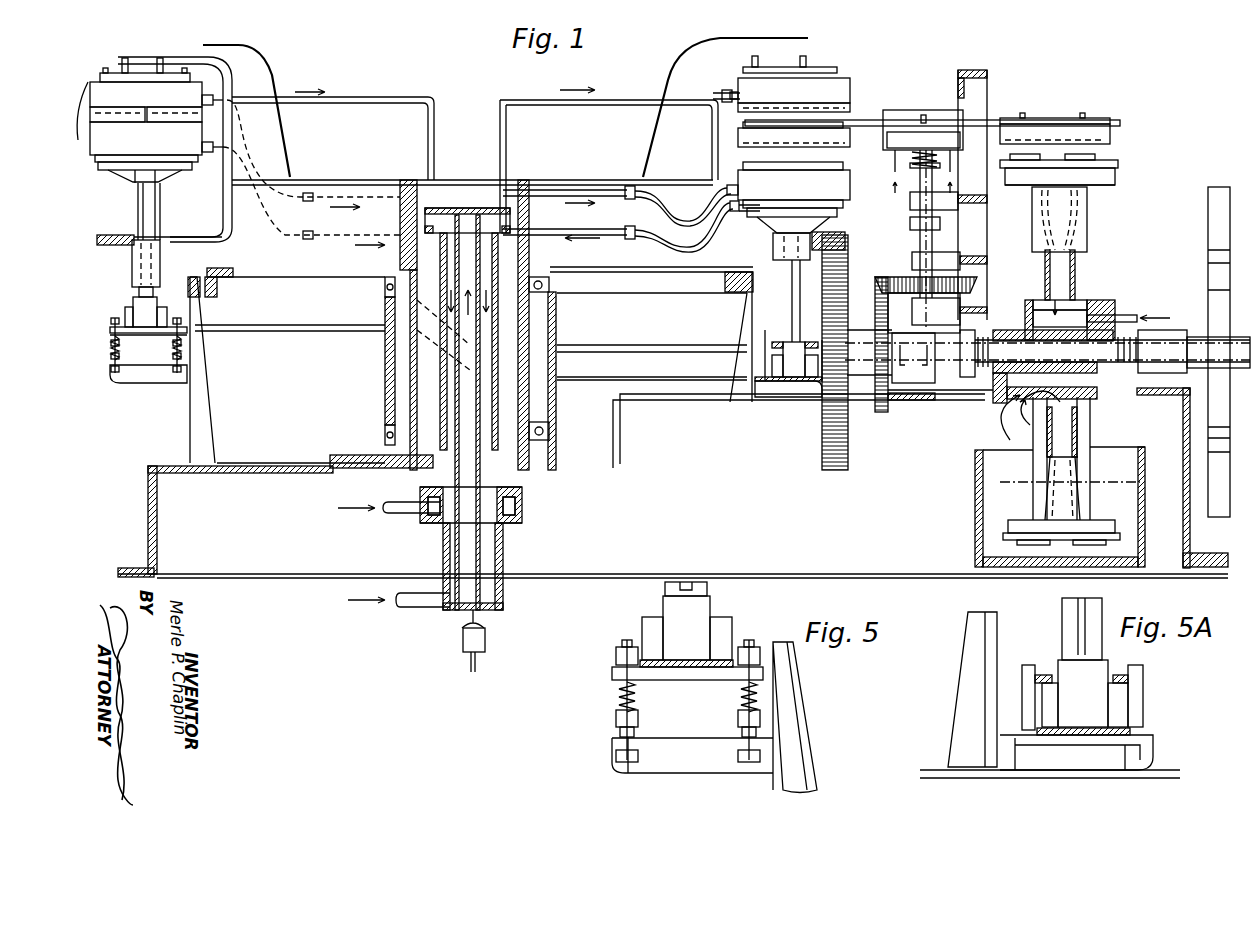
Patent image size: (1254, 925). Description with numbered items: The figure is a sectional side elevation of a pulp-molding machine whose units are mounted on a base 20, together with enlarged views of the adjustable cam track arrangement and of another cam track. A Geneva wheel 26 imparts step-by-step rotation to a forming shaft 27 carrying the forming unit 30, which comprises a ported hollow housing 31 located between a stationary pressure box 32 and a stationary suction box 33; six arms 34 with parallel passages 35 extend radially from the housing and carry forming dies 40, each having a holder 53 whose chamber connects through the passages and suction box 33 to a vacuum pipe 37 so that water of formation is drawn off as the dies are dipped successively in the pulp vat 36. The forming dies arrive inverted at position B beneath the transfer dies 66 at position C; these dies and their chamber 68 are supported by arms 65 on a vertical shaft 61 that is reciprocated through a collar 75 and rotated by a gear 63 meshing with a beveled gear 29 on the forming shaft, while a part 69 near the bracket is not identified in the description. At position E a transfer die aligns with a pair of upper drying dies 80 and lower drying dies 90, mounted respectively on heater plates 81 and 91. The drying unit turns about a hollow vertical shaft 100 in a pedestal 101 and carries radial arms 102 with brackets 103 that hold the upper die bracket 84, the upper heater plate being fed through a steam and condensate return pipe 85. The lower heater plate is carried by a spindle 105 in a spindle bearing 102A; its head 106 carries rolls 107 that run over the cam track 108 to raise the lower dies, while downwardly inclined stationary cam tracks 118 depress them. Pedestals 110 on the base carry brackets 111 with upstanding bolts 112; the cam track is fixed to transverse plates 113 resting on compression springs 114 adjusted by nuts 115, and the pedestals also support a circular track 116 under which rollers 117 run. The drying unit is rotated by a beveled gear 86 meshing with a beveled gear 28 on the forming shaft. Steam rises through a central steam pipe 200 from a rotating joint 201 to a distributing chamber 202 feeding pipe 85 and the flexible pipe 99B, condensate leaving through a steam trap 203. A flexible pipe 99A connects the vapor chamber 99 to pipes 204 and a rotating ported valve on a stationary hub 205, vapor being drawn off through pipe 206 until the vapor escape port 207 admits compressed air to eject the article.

In FIG. 1, the base 20 is at (300, 573).
In FIG. 5A, the base 20 is at (933, 770).
In FIG. 1, the Geneva wheel 26 is at (1208, 218).
In FIG. 1, the forming shaft 27 is at (1100, 375).
In FIG. 1, the beveled gear 28 is at (835, 470).
In FIG. 1, the beveled gear 29 is at (882, 423).
In FIG. 1, the forming unit 30 is at (1090, 290).
In FIG. 1, the hollow housing 31 is at (1038, 320).
In FIG. 1, the stationary pressure box 32 is at (1115, 312).
In FIG. 1, the stationary suction box 33 is at (1006, 382).
In FIG. 1, the arms 34 is at (1087, 226).
In FIG. 1, the passages 35 is at (1075, 266).
In FIG. 1, the vat 36 is at (975, 520).
In FIG. 1, the pipe 37 is at (981, 445).
In FIG. 1, the forming dies 40 is at (1120, 165).
In FIG. 1, the holder 53 is at (1105, 181).
In FIG. 1, the vertical shaft 61 is at (920, 240).
In FIG. 1, the gear 63 is at (894, 282).
In FIG. 1, the arms 65 is at (1020, 120).
In FIG. 1, the transfer dies 66 is at (1118, 126).
In FIG. 1, the chamber 68 is at (1065, 118).
In FIG. 1, the spring bracket 69 is at (873, 122).
In FIG. 1, the collar 75 is at (910, 221).
In FIG. 1, the upper drying dies 80 is at (860, 100).
In FIG. 1, the heater plate 81 is at (470, 115).
In FIG. 1, the bracket 84 is at (118, 73).
In FIG. 1, the steam and condensate return pipe 85 is at (330, 99).
In FIG. 1, the beveled gear 86 is at (110, 245).
In FIG. 1, the lower drying dies 90 is at (852, 166).
In FIG. 1, the heater plate 91 is at (470, 177).
In FIG. 1, the vapor chamber 99 is at (762, 224).
In FIG. 1, the pipe 99A is at (265, 222).
In FIG. 1, the pipe 99B is at (262, 160).
In FIG. 1, the hollow vertical shaft 100 is at (392, 328).
In FIG. 1, the pedestal 101 is at (385, 370).
In FIG. 1, the radial arms 102 is at (185, 240).
In FIG. 1, the spindle bearing 102A is at (132, 280).
In FIG. 1, the brackets 103 is at (210, 45).
In FIG. 1, the spindle 105 is at (140, 220).
In FIG. 5, the spindle 105 is at (665, 589).
In FIG. 5A, the spindle 105 is at (1066, 605).
In FIG. 1, the head 106 is at (158, 305).
In FIG. 5, the head 106 is at (700, 612).
In FIG. 5A, the head 106 is at (1095, 697).
In FIG. 1, the rolls 107 is at (125, 315).
In FIG. 5, the rolls 107 is at (648, 630).
In FIG. 5A, the rolls 107 is at (1047, 697).
In FIG. 1, the cam track 108 is at (290, 333).
In FIG. 5, the cam track 108 is at (648, 660).
In FIG. 5A, the cam track 108 is at (1095, 738).
In FIG. 1, the pedestals 110 is at (195, 422).
In FIG. 5, the pedestals 110 is at (800, 775).
In FIG. 5A, the pedestals 110 is at (960, 710).
In FIG. 1, the brackets 111 is at (148, 382).
In FIG. 5, the brackets 111 is at (695, 765).
In FIG. 5A, the brackets 111 is at (1110, 760).
In FIG. 1, the bolts 112 is at (110, 358).
In FIG. 5, the bolts 112 is at (616, 645).
In FIG. 1, the transverse plates 113 is at (110, 330).
In FIG. 5, the transverse plates 113 is at (612, 675).
In FIG. 1, the compression springs 114 is at (125, 340).
In FIG. 5, the compression springs 114 is at (740, 692).
In FIG. 5, the nuts 115 is at (738, 718).
In FIG. 1, the circular track 116 is at (230, 268).
In FIG. 1, the rollers 117 is at (200, 290).
In FIG. 1, the stationary cam tracks 118 is at (636, 352).
In FIG. 5A, the stationary cam tracks 118 is at (1048, 665).
In FIG. 1, the central steam pipe 200 is at (468, 402).
In FIG. 1, the rotating joint 201 is at (505, 590).
In FIG. 1, the distributing chamber 202 is at (480, 207).
In FIG. 1, the steam trap 203 is at (488, 640).
In FIG. 1, the pipes 204 is at (488, 357).
In FIG. 1, the stationary hub 205 is at (522, 500).
In FIG. 1, the pipe 206 is at (405, 500).
In FIG. 1, the vapor escape port 207 is at (515, 510).
In FIG. 1, the position B is at (1112, 178).
In FIG. 1, the position C is at (1112, 133).
In FIG. 1, the position E is at (738, 137).